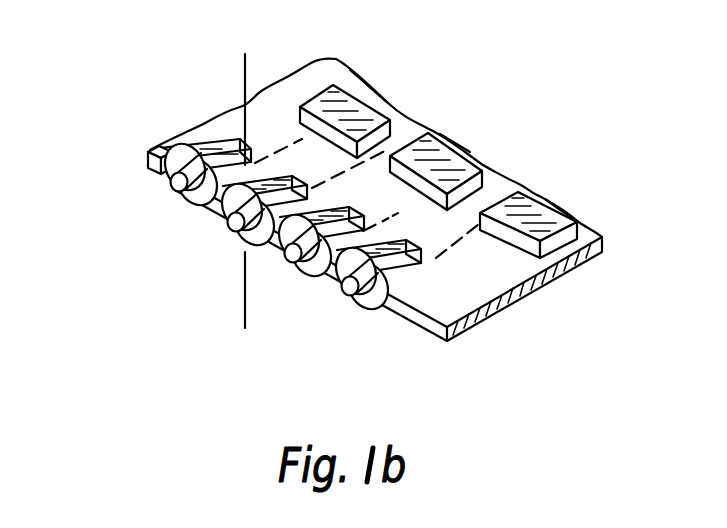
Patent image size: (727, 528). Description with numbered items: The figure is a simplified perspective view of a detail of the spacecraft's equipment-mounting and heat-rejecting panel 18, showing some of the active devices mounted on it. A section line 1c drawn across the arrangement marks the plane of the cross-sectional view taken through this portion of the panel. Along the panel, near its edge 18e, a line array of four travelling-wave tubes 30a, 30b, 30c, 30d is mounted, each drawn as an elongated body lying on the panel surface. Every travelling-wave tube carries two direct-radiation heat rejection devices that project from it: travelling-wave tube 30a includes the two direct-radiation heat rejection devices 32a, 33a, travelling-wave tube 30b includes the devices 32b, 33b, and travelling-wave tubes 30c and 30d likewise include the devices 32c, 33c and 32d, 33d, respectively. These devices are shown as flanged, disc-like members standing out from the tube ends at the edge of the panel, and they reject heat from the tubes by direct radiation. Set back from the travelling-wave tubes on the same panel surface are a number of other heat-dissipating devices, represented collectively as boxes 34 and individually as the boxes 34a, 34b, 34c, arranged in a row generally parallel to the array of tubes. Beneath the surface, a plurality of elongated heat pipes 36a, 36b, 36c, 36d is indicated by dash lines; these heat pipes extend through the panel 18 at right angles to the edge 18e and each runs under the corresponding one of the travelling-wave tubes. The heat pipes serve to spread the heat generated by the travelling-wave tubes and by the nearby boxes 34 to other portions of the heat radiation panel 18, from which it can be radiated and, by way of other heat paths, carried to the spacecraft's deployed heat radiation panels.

The equipment-mounting and heat-rejecting panel 18 is at (328, 68).
The edge of panel 18e is at (149, 155).
The section line for FIG. 1c is at (237, 57).
The travelling-wave tube 30a is at (250, 151).
The travelling-wave tube 30b is at (290, 183).
The travelling-wave tube 30c is at (345, 218).
The travelling-wave tube 30d is at (422, 245).
The direct-radiation heat rejection device 32a is at (172, 190).
The direct-radiation heat rejection device 32b is at (226, 236).
The direct-radiation heat rejection device 32c is at (296, 266).
The direct-radiation heat rejection device 32d is at (352, 307).
The direct-radiation heat rejection device 33a is at (178, 148).
The direct-radiation heat rejection device 33b is at (258, 250).
The direct-radiation heat rejection device 33c is at (316, 278).
The direct-radiation heat rejection device 33d is at (394, 282).
The heat-dissipating boxes 34 is at (558, 135).
The heat-dissipating device box 34a is at (388, 106).
The heat-dissipating device box 34b is at (470, 152).
The heat-dissipating device box 34c is at (573, 212).
The heat pipe 36a is at (354, 101).
The heat pipe 36b is at (429, 134).
The heat pipe 36c is at (398, 216).
The heat pipe 36d is at (526, 209).